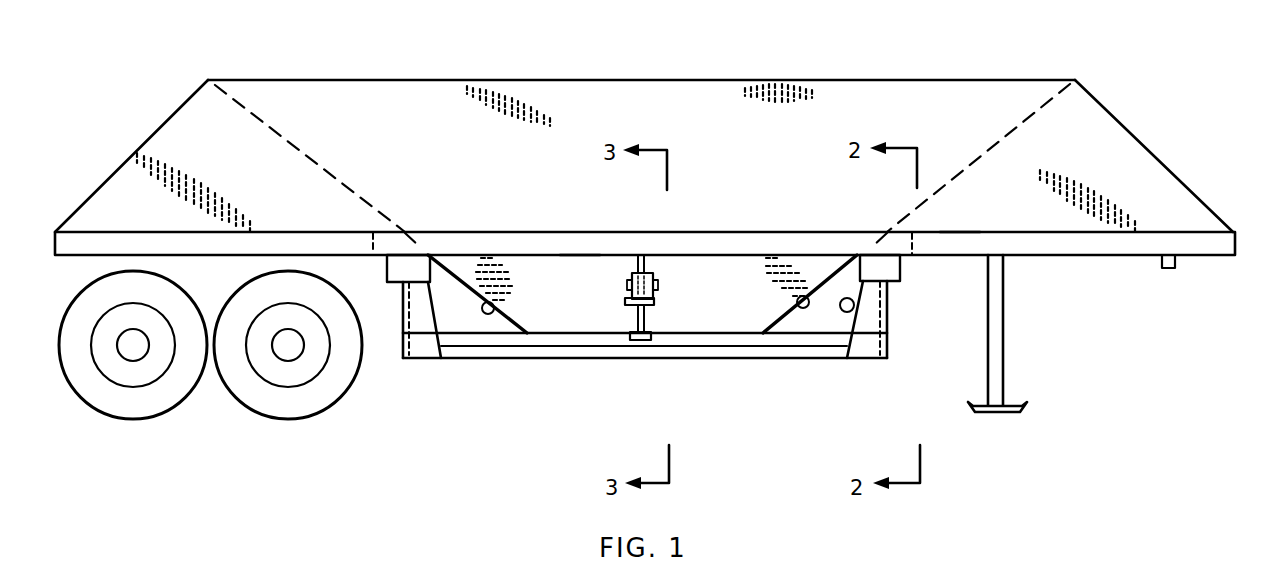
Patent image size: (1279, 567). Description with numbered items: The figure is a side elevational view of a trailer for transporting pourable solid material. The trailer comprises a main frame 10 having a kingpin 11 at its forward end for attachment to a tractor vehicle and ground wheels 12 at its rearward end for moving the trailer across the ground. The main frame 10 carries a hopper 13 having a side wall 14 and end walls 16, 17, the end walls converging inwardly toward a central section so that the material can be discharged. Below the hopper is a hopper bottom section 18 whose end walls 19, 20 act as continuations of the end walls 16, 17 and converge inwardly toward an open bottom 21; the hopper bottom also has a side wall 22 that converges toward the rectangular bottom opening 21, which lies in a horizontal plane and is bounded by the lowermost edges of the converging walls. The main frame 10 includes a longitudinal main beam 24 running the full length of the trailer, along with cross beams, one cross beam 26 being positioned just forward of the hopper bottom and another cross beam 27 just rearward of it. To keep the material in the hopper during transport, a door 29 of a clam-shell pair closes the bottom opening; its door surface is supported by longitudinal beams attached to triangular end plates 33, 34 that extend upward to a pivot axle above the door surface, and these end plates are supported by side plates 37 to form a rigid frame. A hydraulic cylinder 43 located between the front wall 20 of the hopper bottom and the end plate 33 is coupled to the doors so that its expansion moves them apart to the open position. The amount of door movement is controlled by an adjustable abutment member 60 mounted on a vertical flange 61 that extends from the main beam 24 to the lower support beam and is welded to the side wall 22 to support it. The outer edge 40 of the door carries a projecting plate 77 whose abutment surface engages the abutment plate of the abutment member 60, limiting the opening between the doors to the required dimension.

The main frame 10 is at (1092, 262).
The kingpin 11 is at (1176, 262).
The ground wheels 12 is at (209, 415).
The hopper 13 is at (453, 72).
The side wall 14 is at (710, 102).
The end wall 16 is at (342, 180).
The end wall 17 is at (1002, 124).
The hopper bottom section 18 is at (820, 255).
The end wall of hopper bottom 19 is at (500, 312).
The end wall of hopper bottom 20 is at (800, 306).
The open bottom 21 is at (562, 328).
The side wall of hopper bottom 22 is at (577, 257).
The longitudinal main beam 24 is at (957, 240).
The cross beam 26 is at (912, 256).
The cross beam 27 is at (381, 249).
The door 29 is at (598, 363).
The triangular end plate 33 is at (896, 318).
The triangular end plate 34 is at (400, 330).
The side plate 37 is at (426, 344).
The outer edge of door 40 is at (605, 338).
The hydraulic cylinder 43 is at (835, 326).
The abutment member 60 is at (662, 284).
The flange 61 is at (657, 302).
The projecting plate 77 is at (650, 340).